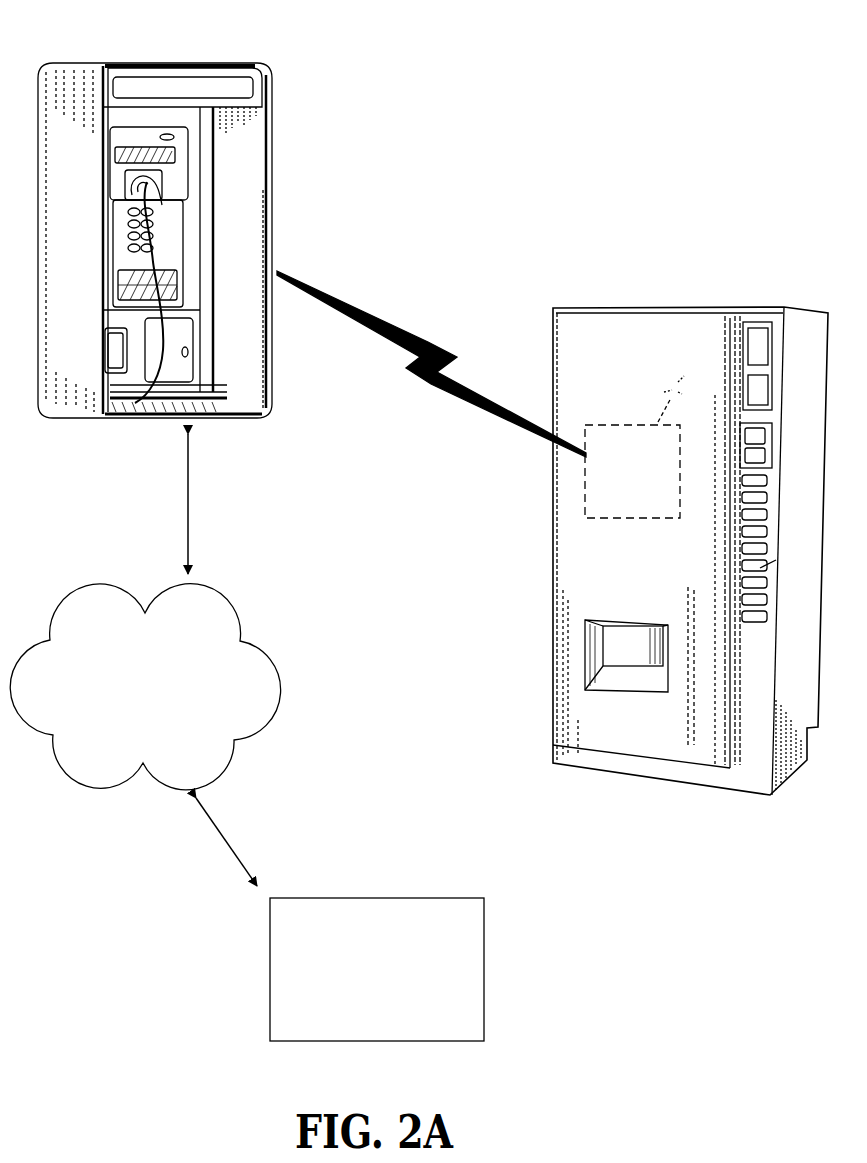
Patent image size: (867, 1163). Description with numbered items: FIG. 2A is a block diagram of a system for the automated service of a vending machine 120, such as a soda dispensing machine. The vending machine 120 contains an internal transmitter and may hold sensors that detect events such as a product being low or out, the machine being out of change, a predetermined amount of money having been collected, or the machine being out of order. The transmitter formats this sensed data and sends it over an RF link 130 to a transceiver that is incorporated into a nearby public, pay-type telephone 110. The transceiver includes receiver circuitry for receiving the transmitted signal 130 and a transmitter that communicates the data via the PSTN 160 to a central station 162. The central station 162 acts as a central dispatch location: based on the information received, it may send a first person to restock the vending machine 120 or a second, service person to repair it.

The public, pay-type telephone 110 is at (270, 60).
The vending machine 120 is at (634, 298).
The RF link 130 is at (405, 333).
The PSTN 160 is at (268, 643).
The central station 162 is at (352, 897).